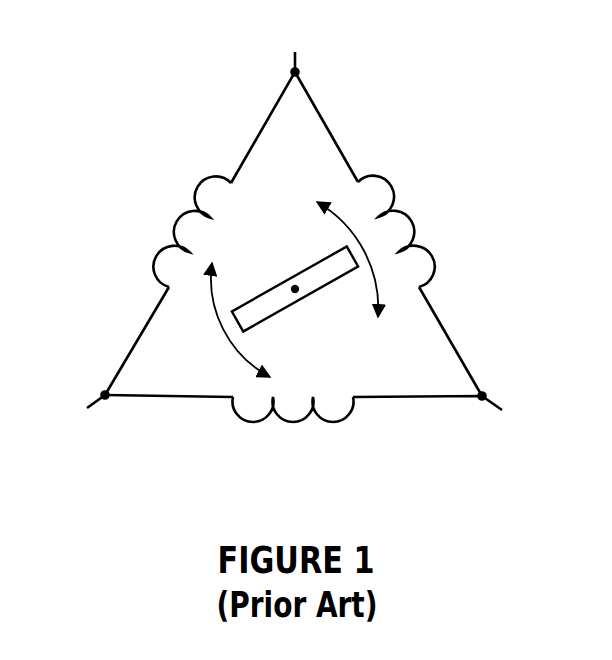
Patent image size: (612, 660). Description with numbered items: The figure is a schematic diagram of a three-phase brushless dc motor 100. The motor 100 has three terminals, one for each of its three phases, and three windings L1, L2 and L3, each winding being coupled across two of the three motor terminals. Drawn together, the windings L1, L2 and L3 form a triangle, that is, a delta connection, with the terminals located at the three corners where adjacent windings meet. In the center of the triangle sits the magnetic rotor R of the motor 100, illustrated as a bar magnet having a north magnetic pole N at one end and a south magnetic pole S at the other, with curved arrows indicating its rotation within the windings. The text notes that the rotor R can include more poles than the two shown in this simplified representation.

The three-phase brushless dc motor 100 is at (463, 156).
The winding L1 is at (185, 231).
The winding L2 is at (292, 430).
The winding L3 is at (404, 231).
The magnetic rotor R is at (292, 307).